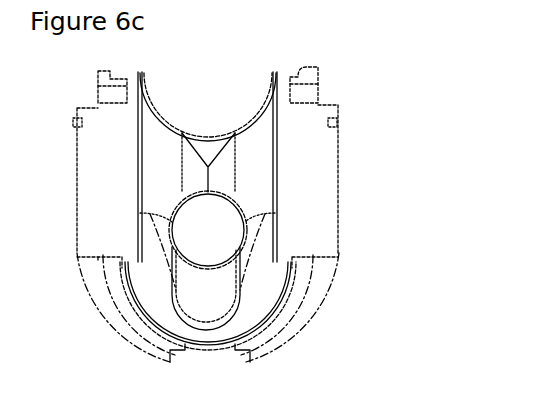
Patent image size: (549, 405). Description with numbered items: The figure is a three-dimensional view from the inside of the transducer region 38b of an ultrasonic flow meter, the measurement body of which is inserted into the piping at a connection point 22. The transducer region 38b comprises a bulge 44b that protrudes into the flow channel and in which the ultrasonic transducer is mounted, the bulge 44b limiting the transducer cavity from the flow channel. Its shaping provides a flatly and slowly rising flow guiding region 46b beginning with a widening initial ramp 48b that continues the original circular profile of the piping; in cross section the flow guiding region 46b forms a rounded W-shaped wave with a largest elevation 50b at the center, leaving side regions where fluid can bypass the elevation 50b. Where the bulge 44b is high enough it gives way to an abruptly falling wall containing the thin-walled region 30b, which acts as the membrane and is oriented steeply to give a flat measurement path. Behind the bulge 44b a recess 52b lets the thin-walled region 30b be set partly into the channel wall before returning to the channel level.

The connection point 22 is at (118, 86).
The transducer region 38b is at (331, 54).
The initial ramp 48b is at (208, 105).
The bulge 44b is at (167, 185).
The flow guiding region 46b is at (253, 173).
The elevation 50b is at (205, 184).
The thin-walled region 30b is at (205, 242).
The recess 52b is at (207, 297).